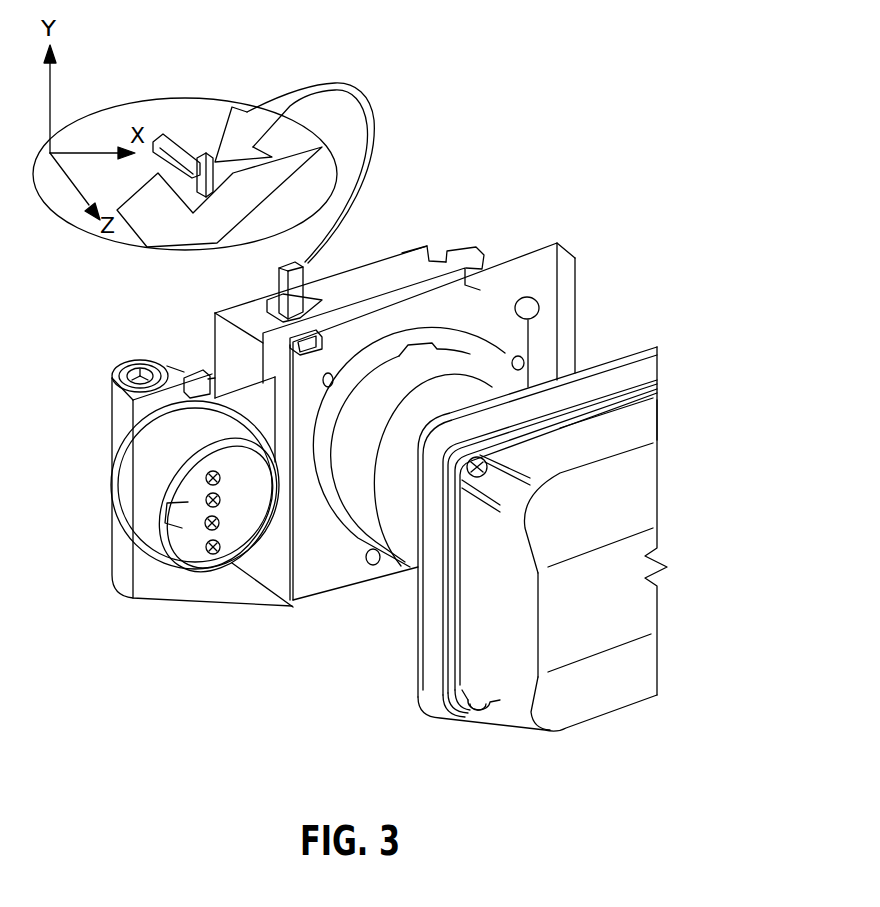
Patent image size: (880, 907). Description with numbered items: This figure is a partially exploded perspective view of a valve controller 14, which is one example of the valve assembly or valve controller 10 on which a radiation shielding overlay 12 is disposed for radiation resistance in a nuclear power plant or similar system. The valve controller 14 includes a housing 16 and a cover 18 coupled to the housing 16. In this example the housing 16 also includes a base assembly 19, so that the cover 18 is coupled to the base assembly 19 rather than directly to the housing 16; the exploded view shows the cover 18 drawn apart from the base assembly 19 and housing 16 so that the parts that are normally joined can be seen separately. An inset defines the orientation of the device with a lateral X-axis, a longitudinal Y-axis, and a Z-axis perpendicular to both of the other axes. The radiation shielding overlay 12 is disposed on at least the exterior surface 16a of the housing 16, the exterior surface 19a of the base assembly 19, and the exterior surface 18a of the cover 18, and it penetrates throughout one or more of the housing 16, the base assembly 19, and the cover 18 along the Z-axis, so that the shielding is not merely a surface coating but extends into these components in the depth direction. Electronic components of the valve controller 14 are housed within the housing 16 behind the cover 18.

The valve controller 10 is at (450, 471).
The valve controller 14 is at (450, 471).
The radiation shielding overlay 12 is at (371, 288).
The housing 16 is at (408, 262).
The exterior surface of the housing 16a is at (433, 267).
The cover 18 is at (655, 417).
The exterior surface of the cover 18a is at (652, 484).
The base assembly 19 is at (617, 372).
The exterior surface of the base 19a is at (554, 413).